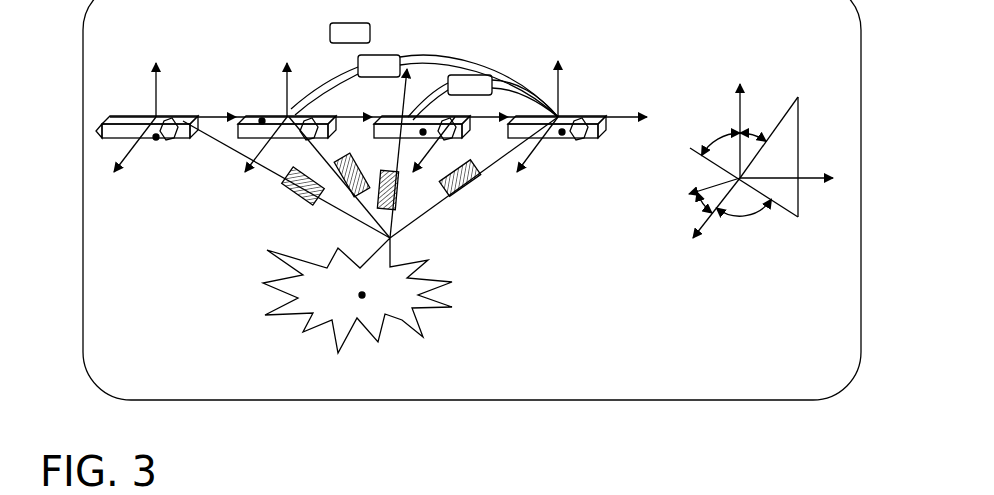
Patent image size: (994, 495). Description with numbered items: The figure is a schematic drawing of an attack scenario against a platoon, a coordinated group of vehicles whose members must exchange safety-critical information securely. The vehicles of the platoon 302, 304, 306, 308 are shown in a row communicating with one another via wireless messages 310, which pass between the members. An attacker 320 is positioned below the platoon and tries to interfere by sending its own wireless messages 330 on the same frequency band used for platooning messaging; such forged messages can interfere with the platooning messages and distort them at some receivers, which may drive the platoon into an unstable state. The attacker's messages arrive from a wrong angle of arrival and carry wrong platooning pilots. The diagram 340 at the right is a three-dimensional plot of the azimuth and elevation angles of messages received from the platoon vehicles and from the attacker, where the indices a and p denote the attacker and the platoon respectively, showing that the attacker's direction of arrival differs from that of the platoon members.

The vehicle of the platoon 302 is at (156, 140).
The vehicle of the platoon 304 is at (261, 119).
The vehicle of the platoon 306 is at (425, 134).
The vehicle of the platoon 308 is at (564, 134).
The wireless messages 310 is at (496, 47).
The attacker 320 is at (362, 298).
The wireless messages 330 is at (463, 196).
The diagram 340 is at (812, 218).